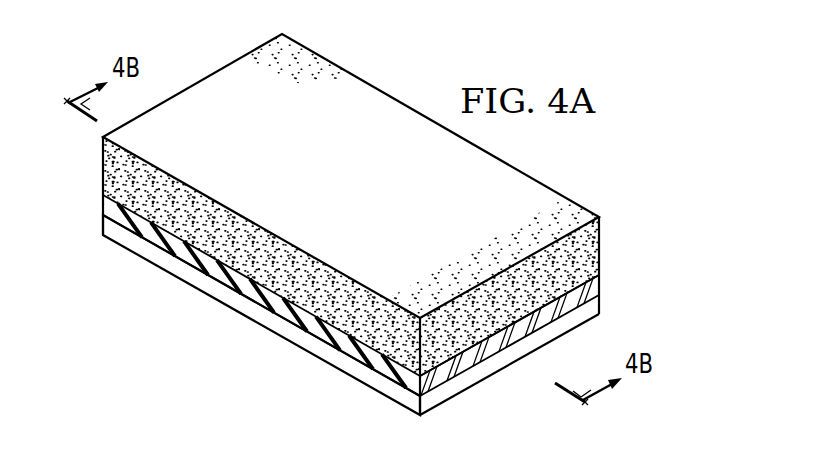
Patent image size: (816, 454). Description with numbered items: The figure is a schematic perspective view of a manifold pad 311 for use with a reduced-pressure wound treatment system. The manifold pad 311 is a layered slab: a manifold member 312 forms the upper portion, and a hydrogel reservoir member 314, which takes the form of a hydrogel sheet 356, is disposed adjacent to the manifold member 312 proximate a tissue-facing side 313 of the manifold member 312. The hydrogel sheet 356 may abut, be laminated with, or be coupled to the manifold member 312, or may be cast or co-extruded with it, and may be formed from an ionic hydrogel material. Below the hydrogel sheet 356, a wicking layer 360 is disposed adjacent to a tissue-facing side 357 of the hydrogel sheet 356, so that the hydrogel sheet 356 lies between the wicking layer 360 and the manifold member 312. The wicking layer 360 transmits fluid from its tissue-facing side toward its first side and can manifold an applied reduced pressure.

The manifold pad 311 is at (162, 65).
The manifold member 312 is at (592, 252).
The tissue-facing side of the manifold member 313 is at (543, 310).
The hydrogel reservoir member 314 is at (608, 287).
The hydrogel sheet 356 is at (110, 208).
The tissue-facing side of the hydrogel sheet 357 is at (485, 363).
The wicking layer 360 is at (130, 240).